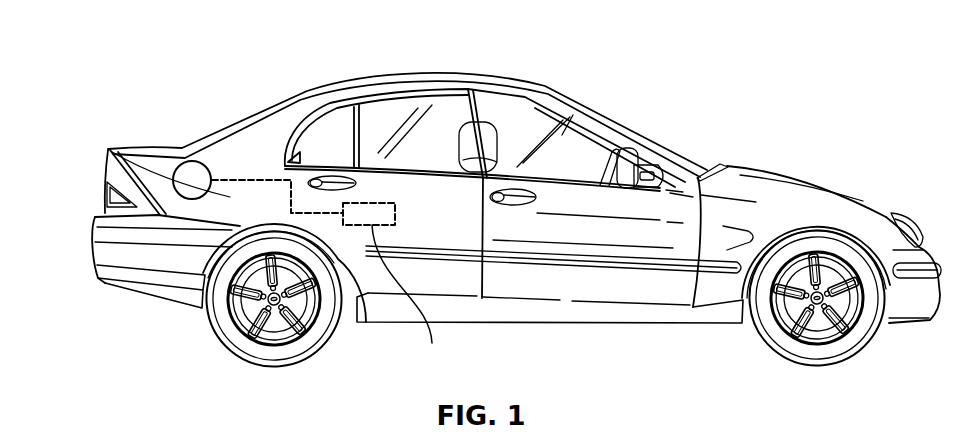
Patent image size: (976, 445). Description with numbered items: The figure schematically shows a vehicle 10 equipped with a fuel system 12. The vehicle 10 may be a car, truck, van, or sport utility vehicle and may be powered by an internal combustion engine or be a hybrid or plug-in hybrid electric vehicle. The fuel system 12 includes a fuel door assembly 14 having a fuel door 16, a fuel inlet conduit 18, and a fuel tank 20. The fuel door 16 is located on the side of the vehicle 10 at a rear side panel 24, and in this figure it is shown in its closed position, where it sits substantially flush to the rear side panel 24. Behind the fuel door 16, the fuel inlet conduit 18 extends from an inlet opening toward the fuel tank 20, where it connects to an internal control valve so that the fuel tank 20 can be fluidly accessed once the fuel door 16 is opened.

The vehicle 10 is at (663, 52).
The fuel system 12 is at (399, 214).
The fuel door assembly 14 is at (166, 178).
The fuel door 16 is at (189, 161).
The fuel inlet conduit 18 is at (272, 178).
The fuel tank 20 is at (411, 302).
The rear side panel 24 is at (126, 222).